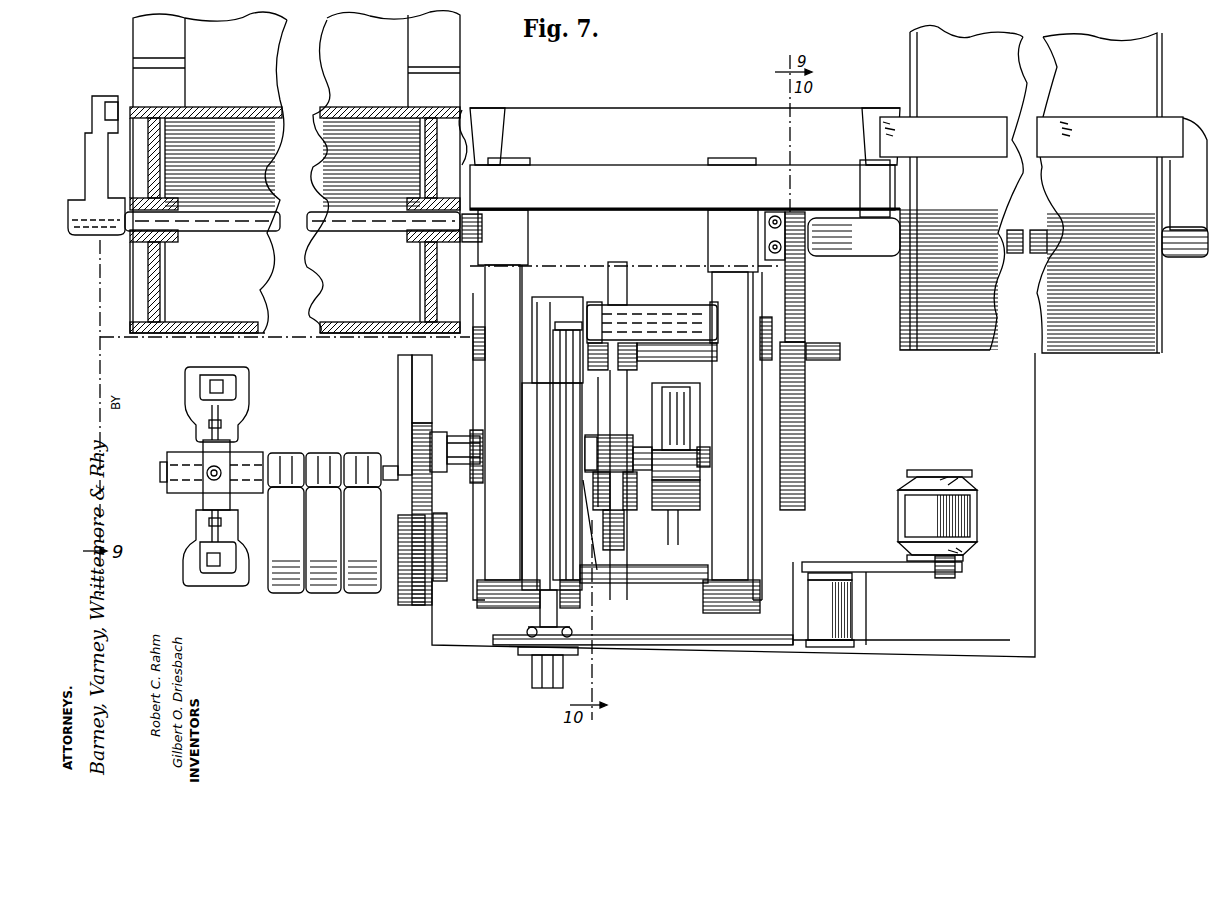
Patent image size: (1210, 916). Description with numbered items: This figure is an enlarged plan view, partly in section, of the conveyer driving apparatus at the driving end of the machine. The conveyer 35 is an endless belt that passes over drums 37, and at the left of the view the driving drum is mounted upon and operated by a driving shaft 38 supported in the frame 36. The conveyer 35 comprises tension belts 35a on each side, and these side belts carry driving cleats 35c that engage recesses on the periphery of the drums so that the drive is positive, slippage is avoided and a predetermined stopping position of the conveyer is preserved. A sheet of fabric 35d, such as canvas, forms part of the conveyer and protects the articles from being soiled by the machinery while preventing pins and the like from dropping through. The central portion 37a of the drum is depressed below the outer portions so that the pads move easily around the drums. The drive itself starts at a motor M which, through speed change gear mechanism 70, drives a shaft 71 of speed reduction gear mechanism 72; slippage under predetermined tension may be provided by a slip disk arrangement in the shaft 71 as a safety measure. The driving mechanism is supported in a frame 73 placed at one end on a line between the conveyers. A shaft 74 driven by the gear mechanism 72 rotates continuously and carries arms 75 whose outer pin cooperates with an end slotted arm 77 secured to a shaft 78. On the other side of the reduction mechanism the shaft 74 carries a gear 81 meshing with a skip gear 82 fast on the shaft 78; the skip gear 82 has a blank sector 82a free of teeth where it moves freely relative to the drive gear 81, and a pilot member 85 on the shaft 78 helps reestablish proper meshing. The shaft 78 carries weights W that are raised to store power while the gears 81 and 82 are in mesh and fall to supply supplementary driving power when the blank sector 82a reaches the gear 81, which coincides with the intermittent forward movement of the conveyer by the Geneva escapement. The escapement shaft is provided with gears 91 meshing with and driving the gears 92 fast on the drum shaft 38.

The conveyer 35 is at (957, 352).
The tension belts 35a is at (178, 40).
The driving cleats 35c is at (177, 62).
The sheet of fabric 35d is at (377, 30).
The frame 36 is at (81, 236).
The drums 37 is at (382, 342).
The central portion of the drum 37a is at (258, 113).
The driving shaft 38 is at (390, 224).
The speed change gear mechanism 70 is at (833, 617).
The shaft 71 is at (580, 598).
The speed reduction gear mechanism 72 is at (600, 508).
The frame 73 is at (488, 596).
The shaft 74 is at (707, 456).
The arms 75 is at (646, 387).
The end slotted arm 77 is at (673, 517).
The shaft 78 is at (176, 438).
The gear 81 is at (430, 438).
The skip gear 82 is at (413, 604).
The blank sector 82a is at (412, 405).
The pilot member 85 is at (402, 366).
The gears 91 is at (798, 488).
The gears 92 is at (807, 262).
The motor M is at (923, 520).
The weights W is at (324, 523).